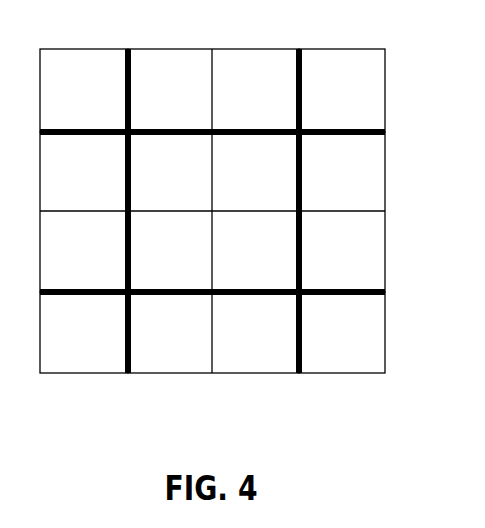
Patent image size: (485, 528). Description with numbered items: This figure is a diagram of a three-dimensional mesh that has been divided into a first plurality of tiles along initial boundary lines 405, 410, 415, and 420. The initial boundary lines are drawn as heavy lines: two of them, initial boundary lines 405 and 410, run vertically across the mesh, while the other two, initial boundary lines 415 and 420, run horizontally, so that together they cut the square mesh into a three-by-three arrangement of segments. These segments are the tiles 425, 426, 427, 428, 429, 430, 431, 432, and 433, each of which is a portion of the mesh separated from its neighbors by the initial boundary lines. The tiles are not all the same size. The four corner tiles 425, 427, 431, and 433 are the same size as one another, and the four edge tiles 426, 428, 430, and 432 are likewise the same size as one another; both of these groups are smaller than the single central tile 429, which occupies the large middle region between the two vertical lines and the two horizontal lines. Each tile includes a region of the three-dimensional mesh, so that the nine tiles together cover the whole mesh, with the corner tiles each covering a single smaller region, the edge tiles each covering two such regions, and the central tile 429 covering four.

The initial boundary line 405 is at (132, 53).
The initial boundary line 410 is at (303, 54).
The initial boundary line 415 is at (381, 129).
The initial boundary line 420 is at (377, 289).
The tile 425 is at (84, 90).
The tile 426 is at (213, 90).
The tile 427 is at (342, 90).
The tile 428 is at (84, 212).
The tile 429 is at (213, 212).
The tile 430 is at (342, 212).
The tile 431 is at (84, 332).
The tile 432 is at (213, 332).
The tile 433 is at (342, 332).